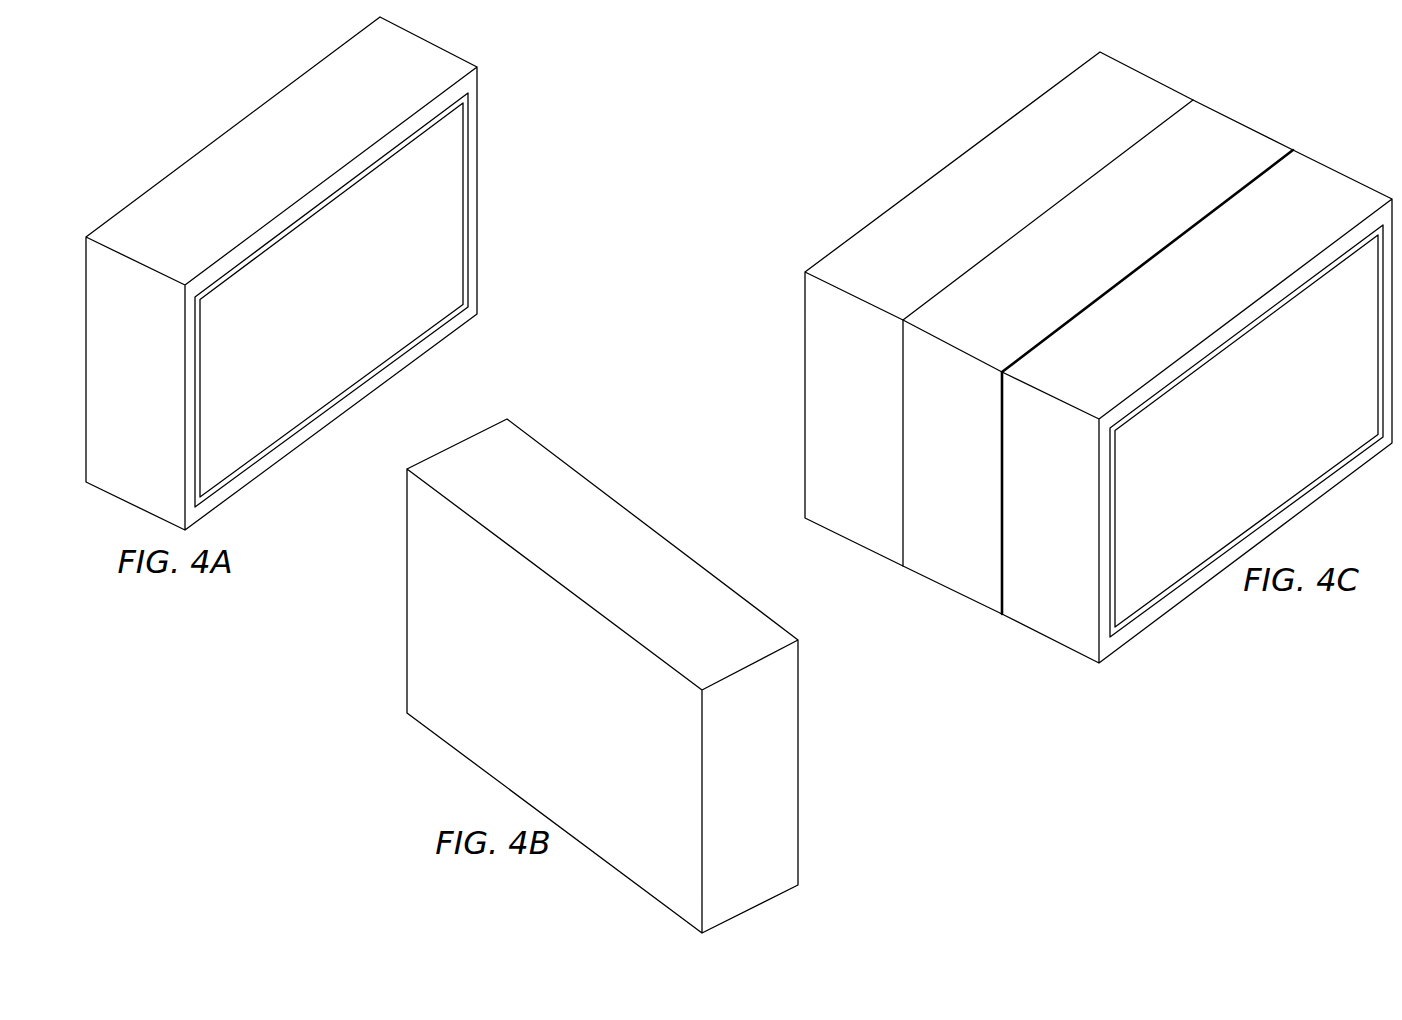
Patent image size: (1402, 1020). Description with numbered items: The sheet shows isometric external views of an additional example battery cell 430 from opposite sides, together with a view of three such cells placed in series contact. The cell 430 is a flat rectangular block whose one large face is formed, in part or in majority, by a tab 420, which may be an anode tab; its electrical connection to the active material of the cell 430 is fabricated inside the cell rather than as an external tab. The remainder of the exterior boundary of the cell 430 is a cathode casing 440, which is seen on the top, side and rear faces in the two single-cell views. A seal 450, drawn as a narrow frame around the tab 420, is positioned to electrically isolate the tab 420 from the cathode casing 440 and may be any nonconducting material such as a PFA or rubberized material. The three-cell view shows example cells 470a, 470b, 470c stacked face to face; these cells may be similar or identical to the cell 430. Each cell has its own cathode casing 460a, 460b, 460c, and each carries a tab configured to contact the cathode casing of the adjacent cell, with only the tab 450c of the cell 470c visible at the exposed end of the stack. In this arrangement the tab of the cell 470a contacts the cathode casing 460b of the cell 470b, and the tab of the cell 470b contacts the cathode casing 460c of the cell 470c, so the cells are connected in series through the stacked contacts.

In FIG. 4A, the tab 420 is at (433, 242).
In FIG. 4A, the battery cell 430 is at (322, 327).
In FIG. 4B, the battery cell 430 is at (536, 716).
In FIG. 4A, the cathode casing 440 is at (191, 284).
In FIG. 4B, the cathode casing 440 is at (505, 502).
In FIG. 4A, the seal 450 is at (465, 158).
In FIG. 4C, the tab 450c is at (1347, 312).
In FIG. 4C, the cathode casing 460a is at (878, 263).
In FIG. 4C, the cathode casing 460b is at (977, 342).
In FIG. 4C, the cathode casing 460c is at (1085, 395).
In FIG. 4C, the battery cell 470a is at (969, 214).
In FIG. 4C, the battery cell 470b is at (1067, 259).
In FIG. 4C, the battery cell 470c is at (1164, 314).